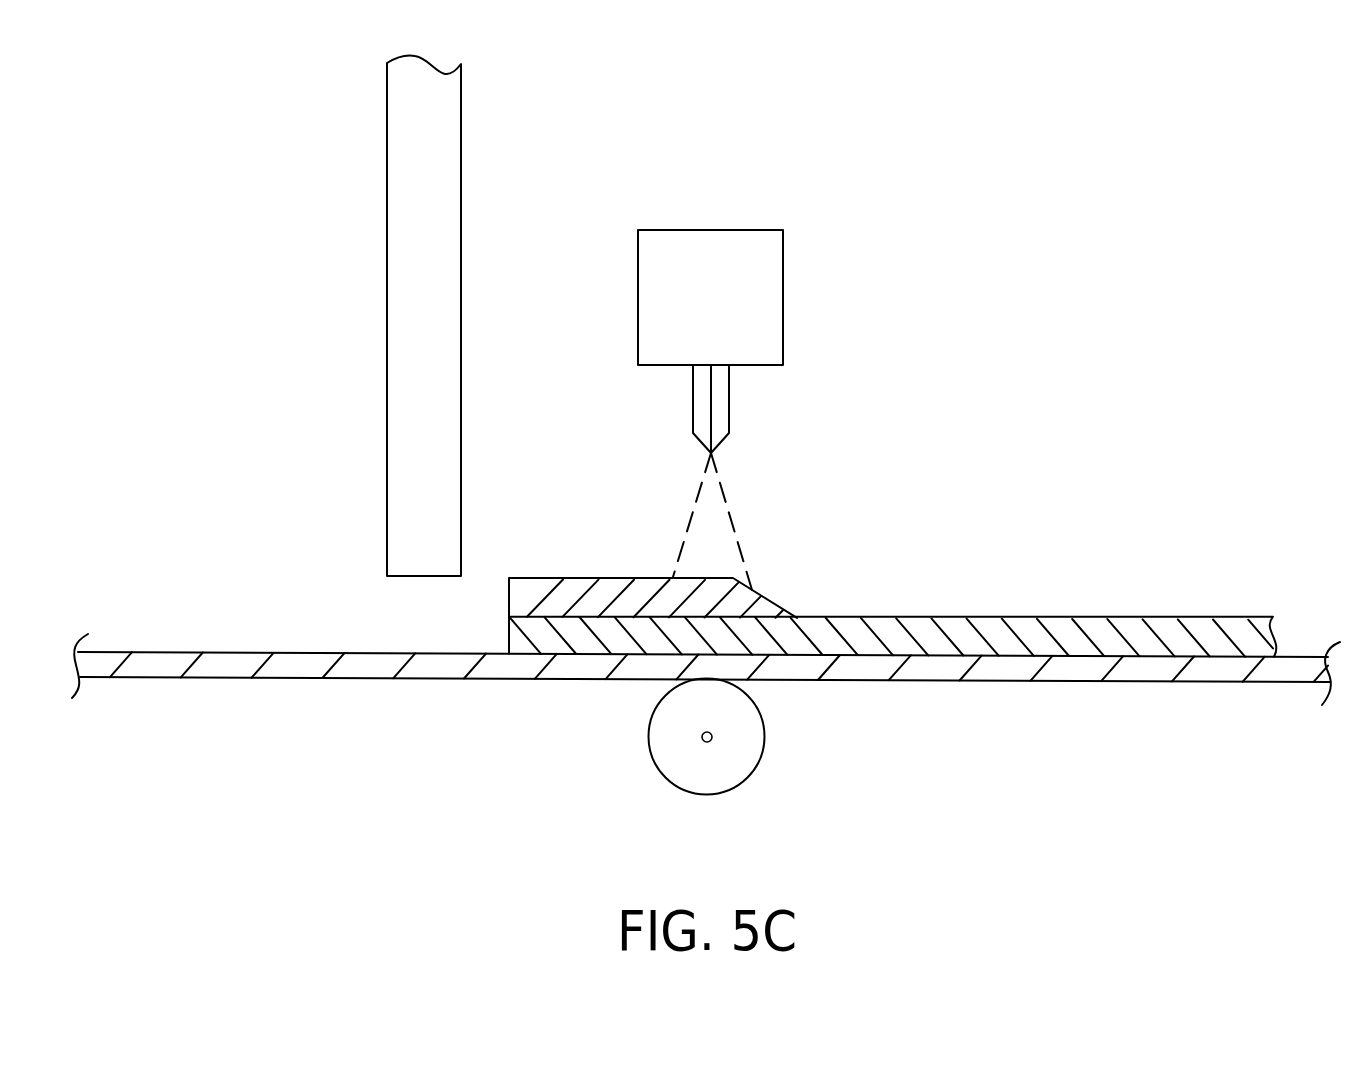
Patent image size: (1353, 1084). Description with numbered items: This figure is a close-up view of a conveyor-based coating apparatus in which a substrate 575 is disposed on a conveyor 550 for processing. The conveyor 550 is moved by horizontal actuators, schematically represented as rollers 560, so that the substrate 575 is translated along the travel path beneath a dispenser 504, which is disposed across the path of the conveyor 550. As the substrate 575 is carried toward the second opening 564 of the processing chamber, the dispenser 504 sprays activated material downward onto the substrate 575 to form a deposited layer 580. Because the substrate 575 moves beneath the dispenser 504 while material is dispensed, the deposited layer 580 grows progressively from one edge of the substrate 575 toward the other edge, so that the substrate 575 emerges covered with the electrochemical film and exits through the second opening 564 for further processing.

The dispenser 504 is at (737, 309).
The conveyor 550 is at (373, 678).
The rollers 560 is at (765, 737).
The second opening 564 is at (433, 610).
The substrate 575 is at (1165, 618).
The deposited layer 580 is at (770, 599).